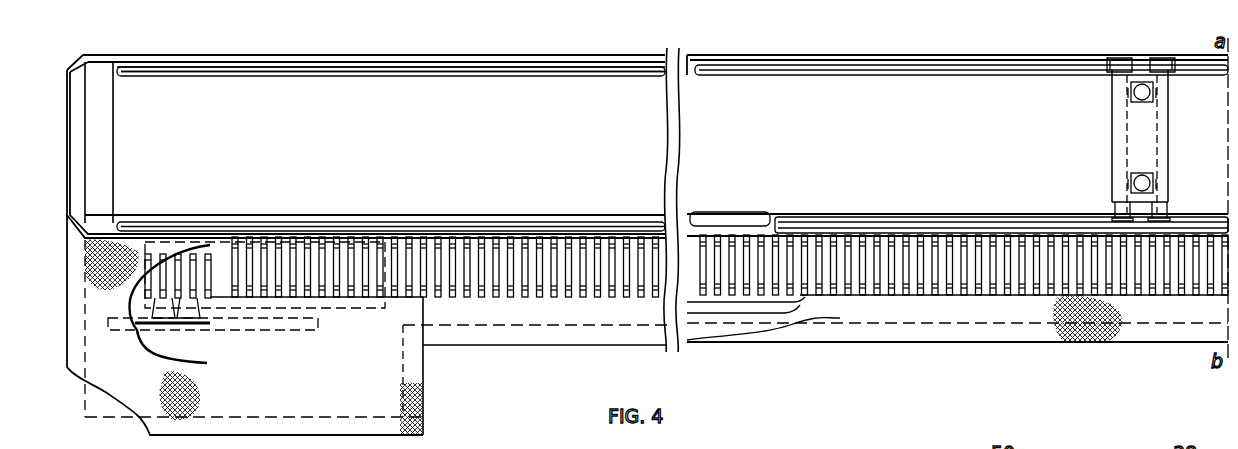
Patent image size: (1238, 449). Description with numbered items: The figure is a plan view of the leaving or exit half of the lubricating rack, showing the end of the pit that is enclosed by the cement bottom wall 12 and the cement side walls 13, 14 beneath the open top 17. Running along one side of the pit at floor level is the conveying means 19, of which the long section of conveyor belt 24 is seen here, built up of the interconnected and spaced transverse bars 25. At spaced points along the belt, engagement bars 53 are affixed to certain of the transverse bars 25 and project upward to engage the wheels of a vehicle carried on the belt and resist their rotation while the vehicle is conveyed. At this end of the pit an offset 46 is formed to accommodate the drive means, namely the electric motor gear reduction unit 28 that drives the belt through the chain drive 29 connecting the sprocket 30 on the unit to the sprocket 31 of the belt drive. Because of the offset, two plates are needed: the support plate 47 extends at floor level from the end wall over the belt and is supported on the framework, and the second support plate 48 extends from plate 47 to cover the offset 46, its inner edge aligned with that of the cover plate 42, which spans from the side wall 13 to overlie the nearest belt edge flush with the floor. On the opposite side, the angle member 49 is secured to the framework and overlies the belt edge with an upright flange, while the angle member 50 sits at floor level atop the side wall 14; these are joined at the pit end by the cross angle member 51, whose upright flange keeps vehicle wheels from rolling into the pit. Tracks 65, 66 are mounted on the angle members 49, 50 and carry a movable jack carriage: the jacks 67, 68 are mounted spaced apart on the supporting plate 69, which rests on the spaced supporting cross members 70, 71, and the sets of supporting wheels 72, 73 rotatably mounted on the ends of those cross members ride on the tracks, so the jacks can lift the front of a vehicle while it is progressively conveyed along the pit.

The bottom wall 12 is at (530, 111).
The side wall 13 is at (518, 327).
The side wall 14 is at (250, 76).
The open top 17 is at (672, 142).
The conveying means 19 is at (1033, 296).
The conveyor belt 24 is at (842, 206).
The transverse bars 25 is at (898, 240).
The electric motor gear reduction unit 28 is at (318, 308).
The chain drive 29 is at (164, 345).
The sprocket 30 is at (290, 326).
The sprocket 31 is at (137, 331).
The cover plate 42 is at (958, 331).
The offset 46 is at (425, 366).
The support plate 47 is at (120, 385).
The support plate 48 is at (408, 400).
The angle member 49 is at (465, 238).
The angle member 50 is at (362, 67).
The cross angle member 51 is at (78, 143).
The engagement bars 53 is at (570, 290).
The track 65 is at (538, 223).
The track 66 is at (425, 72).
The jack 67 is at (1134, 184).
The jack 68 is at (1131, 96).
The supporting plate 69 is at (1136, 143).
The supporting cross member 70 is at (1112, 74).
The supporting cross member 71 is at (1170, 73).
The supporting wheels 72 is at (1110, 214).
The supporting wheels 73 is at (1170, 214).